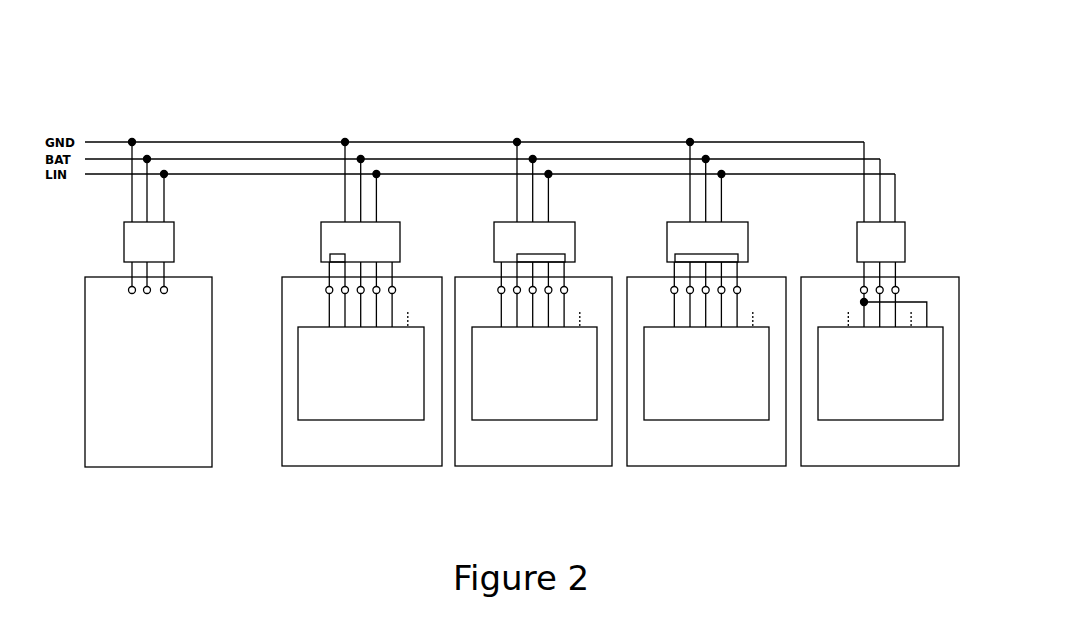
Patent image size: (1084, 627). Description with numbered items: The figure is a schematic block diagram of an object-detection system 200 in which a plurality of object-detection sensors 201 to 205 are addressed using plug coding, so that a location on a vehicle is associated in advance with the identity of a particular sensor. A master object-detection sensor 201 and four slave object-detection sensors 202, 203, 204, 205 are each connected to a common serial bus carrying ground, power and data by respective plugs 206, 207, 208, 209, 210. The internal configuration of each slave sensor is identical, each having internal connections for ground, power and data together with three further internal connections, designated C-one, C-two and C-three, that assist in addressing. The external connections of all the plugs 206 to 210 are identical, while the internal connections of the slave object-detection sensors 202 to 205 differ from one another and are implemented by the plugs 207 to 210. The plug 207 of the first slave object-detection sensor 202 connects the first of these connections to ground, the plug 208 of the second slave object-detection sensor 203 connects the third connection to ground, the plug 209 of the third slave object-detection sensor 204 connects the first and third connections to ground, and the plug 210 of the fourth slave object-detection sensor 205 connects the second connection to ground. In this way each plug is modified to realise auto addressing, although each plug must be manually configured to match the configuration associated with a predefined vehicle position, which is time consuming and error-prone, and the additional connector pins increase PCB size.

The object-detection system 200 is at (683, 100).
The object-detection sensor 201 is at (138, 467).
The first slave object-detection sensor 202 is at (355, 466).
The second slave object-detection sensor 203 is at (527, 466).
The third slave object-detection sensor 204 is at (699, 466).
The fourth slave object-detection sensor 205 is at (873, 466).
The plug 206 is at (231, 141).
The plug 207 is at (321, 240).
The plug 208 is at (286, 158).
The plug 209 is at (667, 240).
The plug 210 is at (246, 178).